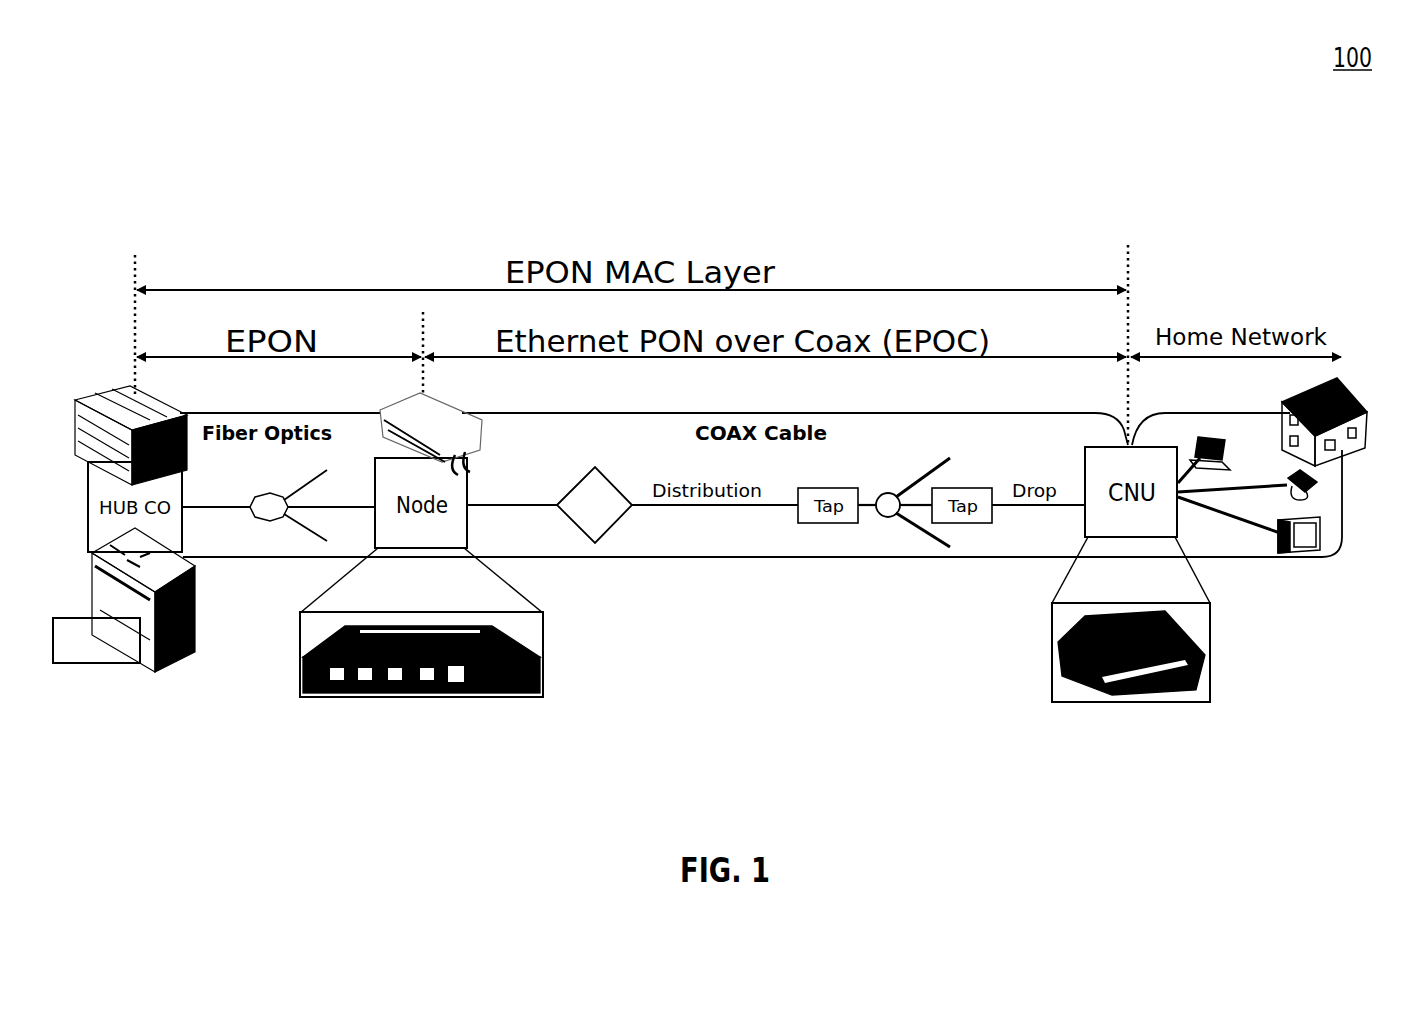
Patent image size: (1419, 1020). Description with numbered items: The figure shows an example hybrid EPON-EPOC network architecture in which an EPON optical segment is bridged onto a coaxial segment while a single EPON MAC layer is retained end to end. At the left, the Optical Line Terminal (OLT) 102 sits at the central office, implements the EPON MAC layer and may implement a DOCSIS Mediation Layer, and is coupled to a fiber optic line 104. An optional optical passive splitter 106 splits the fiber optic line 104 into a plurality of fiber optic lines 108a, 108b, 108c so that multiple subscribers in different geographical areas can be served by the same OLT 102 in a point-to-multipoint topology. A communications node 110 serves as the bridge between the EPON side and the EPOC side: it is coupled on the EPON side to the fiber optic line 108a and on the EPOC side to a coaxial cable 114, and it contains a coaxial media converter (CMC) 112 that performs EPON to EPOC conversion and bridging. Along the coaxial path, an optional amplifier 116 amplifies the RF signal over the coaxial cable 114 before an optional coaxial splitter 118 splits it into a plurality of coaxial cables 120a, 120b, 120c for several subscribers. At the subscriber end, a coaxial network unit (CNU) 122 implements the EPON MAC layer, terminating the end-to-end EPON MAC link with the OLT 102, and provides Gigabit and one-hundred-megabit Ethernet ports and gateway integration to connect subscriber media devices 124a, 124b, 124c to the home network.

The optical line terminal (OLT) 102 is at (203, 613).
The fiber optic line 104 is at (210, 503).
The optical passive splitter 106 is at (258, 514).
The fiber optic line 108a is at (357, 502).
The fiber optic line 108b is at (296, 482).
The fiber optic line 108c is at (296, 527).
The communications node 110 is at (460, 403).
The coaxial media converter (CMC) 112 is at (548, 680).
The coaxial cable 114 is at (525, 500).
The amplifier 116 is at (608, 528).
The coaxial splitter 118 is at (877, 517).
The coaxial cable 120a is at (1022, 505).
The coaxial cable 120b is at (912, 470).
The coaxial cable 120c is at (913, 535).
The coaxial network unit (CNU) 122 is at (1212, 675).
The subscriber media device 124a is at (1222, 430).
The subscriber media device 124b is at (1317, 497).
The subscriber media device 124c is at (1296, 553).